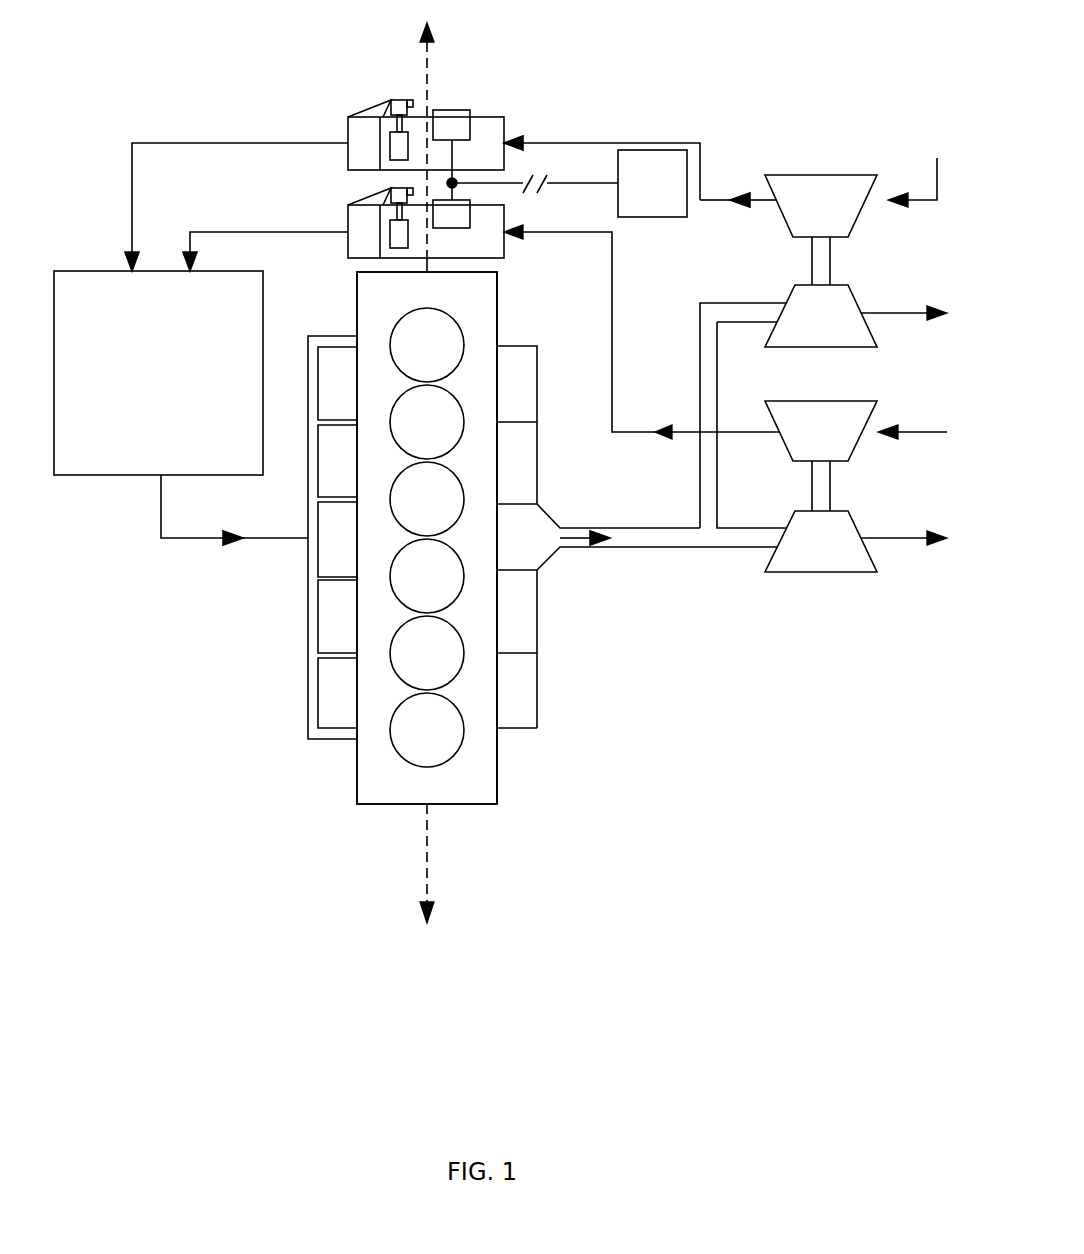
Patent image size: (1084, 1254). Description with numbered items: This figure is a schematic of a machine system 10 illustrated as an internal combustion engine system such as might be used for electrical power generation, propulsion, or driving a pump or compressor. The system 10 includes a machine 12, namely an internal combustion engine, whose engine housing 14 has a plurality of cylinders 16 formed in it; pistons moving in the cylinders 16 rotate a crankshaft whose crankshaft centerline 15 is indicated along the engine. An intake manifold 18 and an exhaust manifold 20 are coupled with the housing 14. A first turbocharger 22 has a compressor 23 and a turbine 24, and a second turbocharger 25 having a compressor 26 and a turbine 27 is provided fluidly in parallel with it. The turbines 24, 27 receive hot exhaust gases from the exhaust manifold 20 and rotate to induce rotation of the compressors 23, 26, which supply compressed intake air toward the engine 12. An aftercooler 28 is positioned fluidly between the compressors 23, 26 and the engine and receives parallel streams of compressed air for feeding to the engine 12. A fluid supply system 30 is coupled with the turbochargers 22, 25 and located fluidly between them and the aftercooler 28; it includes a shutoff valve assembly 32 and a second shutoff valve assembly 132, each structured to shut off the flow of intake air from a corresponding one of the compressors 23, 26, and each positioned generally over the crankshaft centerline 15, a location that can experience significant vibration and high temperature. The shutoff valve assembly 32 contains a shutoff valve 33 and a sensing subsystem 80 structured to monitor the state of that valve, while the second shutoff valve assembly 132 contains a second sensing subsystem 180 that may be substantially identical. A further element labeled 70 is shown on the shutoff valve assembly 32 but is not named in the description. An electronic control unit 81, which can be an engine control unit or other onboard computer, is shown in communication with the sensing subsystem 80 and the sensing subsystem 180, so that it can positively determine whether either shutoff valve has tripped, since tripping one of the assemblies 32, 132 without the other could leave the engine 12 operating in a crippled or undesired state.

The machine system 10 is at (205, 665).
The machine 12 is at (333, 762).
The engine housing 14 is at (497, 777).
The crankshaft centerline 15 is at (427, 870).
The cylinders 16 is at (458, 720).
The intake manifold 18 is at (308, 613).
The exhaust manifold 20 is at (537, 613).
The first turbocharger 22 is at (850, 233).
The compressor 23 is at (875, 175).
The turbine 24 is at (800, 285).
The second turbocharger 25 is at (850, 460).
The compressor 26 is at (875, 401).
The turbine 27 is at (800, 511).
The aftercooler 28 is at (83, 270).
The fluid supply system 30 is at (668, 98).
The shutoff valve assembly 32 is at (480, 98).
The shutoff valve 33 is at (504, 120).
The fuel injector 70 is at (368, 94).
The sensing subsystem 80 is at (452, 110).
The electronic control unit 81 is at (657, 218).
The shutoff valve assembly 132 is at (520, 272).
The sensing subsystem 180 is at (452, 228).